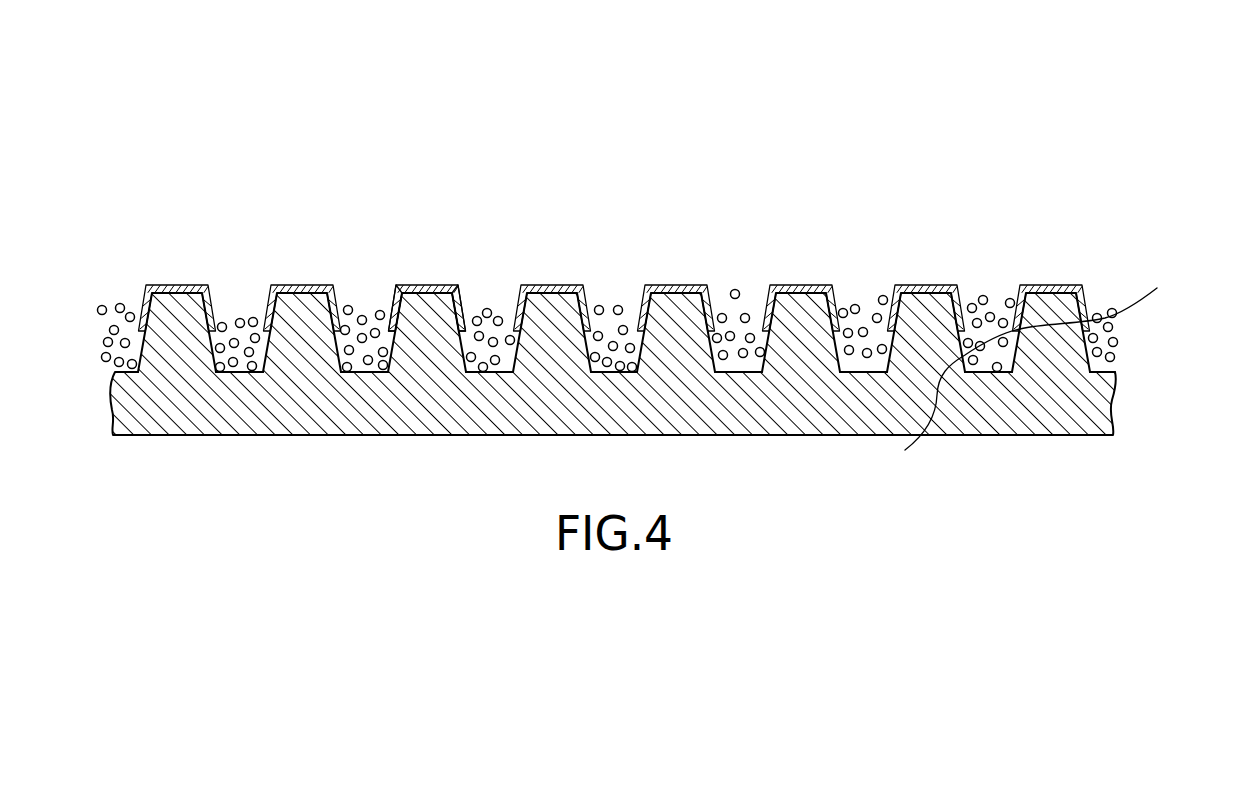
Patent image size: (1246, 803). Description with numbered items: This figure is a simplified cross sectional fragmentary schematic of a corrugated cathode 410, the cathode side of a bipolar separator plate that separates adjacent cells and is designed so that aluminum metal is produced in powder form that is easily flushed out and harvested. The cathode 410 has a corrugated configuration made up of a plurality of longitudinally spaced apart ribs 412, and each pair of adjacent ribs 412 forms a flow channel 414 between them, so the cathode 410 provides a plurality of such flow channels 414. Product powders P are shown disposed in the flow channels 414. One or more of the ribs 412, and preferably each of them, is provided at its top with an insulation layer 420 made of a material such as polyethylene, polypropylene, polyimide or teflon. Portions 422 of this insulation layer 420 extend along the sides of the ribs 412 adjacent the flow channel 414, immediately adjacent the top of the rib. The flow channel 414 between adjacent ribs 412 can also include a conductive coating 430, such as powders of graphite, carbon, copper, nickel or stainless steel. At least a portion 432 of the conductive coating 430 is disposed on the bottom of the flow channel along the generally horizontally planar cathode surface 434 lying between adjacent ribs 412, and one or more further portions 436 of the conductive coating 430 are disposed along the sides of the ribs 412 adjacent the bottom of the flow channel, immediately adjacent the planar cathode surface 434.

The cathode 410 is at (627, 113).
The ribs 412 is at (173, 317).
The flow channel 414 is at (235, 305).
The insulation layer 420 is at (432, 287).
The portions of insulation layer 422 is at (390, 310).
The conductive coating 430 is at (1133, 307).
The portion of conductive coating 432 is at (972, 303).
The product powders P is at (984, 296).
The cathode surface 434 is at (1027, 357).
The portions of conductive coating 436 is at (930, 430).